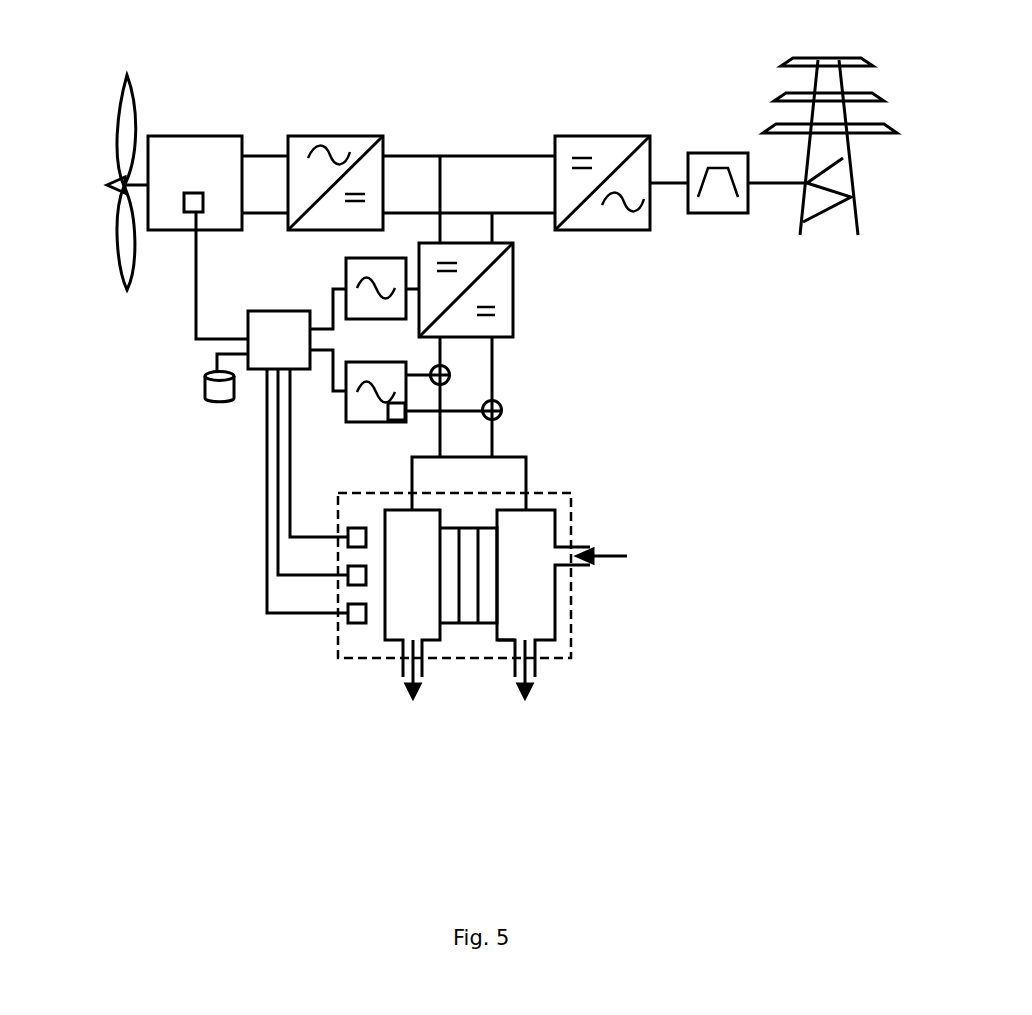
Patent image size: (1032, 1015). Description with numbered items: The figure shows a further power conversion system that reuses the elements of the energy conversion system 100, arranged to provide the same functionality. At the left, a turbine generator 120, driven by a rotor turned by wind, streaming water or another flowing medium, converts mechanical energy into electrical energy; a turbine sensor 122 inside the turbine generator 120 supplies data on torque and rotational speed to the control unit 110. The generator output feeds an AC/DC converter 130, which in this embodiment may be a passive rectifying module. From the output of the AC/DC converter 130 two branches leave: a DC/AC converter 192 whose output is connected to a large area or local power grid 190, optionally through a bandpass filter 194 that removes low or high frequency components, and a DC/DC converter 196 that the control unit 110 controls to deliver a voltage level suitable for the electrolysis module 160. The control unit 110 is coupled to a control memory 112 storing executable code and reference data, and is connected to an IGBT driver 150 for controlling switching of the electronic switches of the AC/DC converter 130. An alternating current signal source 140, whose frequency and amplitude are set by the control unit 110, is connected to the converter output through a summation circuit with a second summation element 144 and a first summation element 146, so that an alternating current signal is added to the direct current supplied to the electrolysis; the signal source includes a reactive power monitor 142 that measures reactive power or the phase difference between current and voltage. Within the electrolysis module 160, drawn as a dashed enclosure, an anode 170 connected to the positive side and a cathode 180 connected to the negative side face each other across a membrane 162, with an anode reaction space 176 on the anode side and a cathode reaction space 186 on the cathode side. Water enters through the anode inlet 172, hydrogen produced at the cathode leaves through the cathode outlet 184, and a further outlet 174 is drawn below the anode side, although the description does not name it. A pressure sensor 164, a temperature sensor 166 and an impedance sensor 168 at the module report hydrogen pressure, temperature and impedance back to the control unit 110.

The energy conversion system 100 is at (115, 115).
The turbine generator 120 is at (150, 137).
The turbine sensor 122 is at (188, 193).
The AC/DC converter 130 is at (305, 137).
The DC/AC converter 192 is at (605, 137).
The bandpass filter 194 is at (718, 153).
The power grid 190 is at (857, 207).
The DC/DC converter 196 is at (513, 290).
The IGBT driver 150 is at (347, 265).
The alternating current signal source 140 is at (407, 395).
The reactive power monitor 142 is at (397, 415).
The second summation element 144 is at (448, 368).
The first summation element 146 is at (502, 403).
The control unit 110 is at (253, 353).
The control memory 112 is at (207, 390).
The electrolysis module 160 is at (573, 498).
The anode 170 is at (557, 532).
The anode inlet 172 is at (583, 547).
The oxygen outlet 174 is at (538, 660).
The anode reaction space 176 is at (503, 617).
The cathode 180 is at (392, 617).
The cathode outlet 184 is at (405, 643).
The cathode reaction space 186 is at (450, 617).
The membrane 162 is at (470, 617).
The pressure sensor 164 is at (347, 547).
The temperature sensor 166 is at (347, 585).
The impedance sensor 168 is at (347, 623).